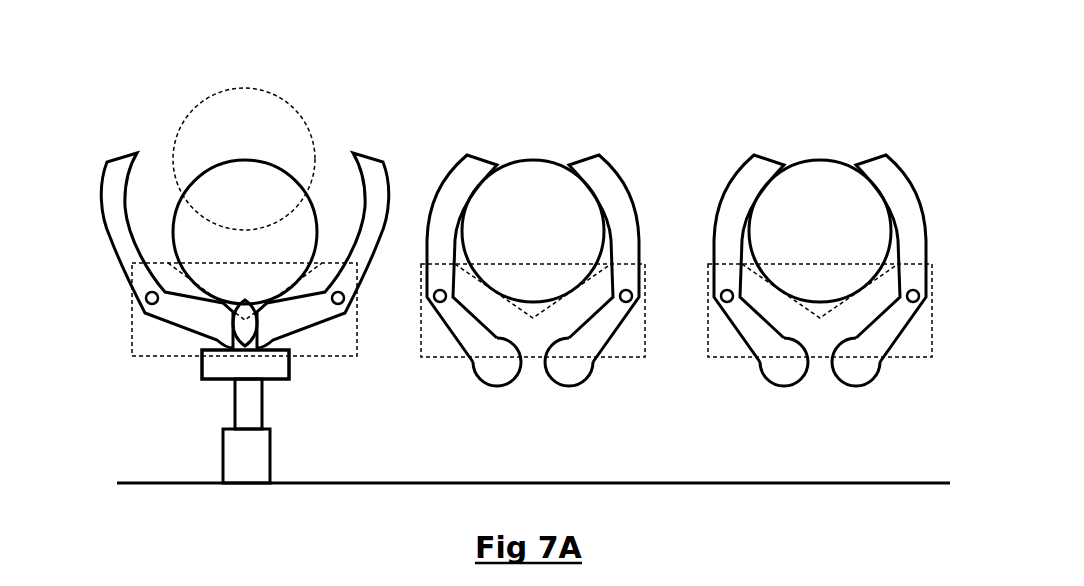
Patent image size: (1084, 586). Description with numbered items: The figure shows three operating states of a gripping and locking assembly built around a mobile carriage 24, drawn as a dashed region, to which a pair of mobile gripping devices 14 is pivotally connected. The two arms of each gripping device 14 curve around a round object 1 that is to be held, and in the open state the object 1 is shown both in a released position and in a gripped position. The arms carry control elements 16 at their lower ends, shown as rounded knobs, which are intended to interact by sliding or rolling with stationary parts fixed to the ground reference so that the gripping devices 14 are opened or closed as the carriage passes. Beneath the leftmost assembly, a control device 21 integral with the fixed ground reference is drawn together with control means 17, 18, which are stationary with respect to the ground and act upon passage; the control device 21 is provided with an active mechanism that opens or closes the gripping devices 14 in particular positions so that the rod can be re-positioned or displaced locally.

The object (fruit/product) to be gripped 1 is at (220, 125).
The mobile gripping device 14 is at (120, 150).
The control element 16 is at (568, 365).
The control means 17 is at (282, 387).
The control means 18 is at (227, 403).
The control device 21 is at (248, 458).
The mobile carriage 24 is at (150, 345).